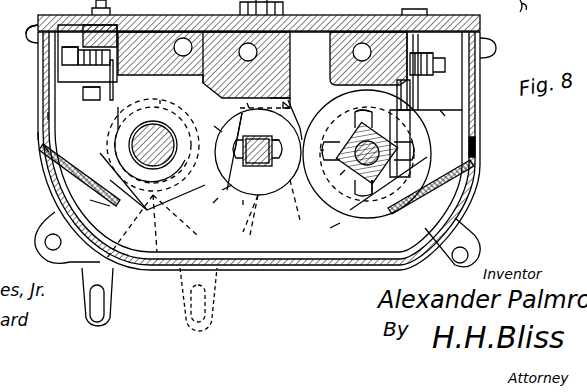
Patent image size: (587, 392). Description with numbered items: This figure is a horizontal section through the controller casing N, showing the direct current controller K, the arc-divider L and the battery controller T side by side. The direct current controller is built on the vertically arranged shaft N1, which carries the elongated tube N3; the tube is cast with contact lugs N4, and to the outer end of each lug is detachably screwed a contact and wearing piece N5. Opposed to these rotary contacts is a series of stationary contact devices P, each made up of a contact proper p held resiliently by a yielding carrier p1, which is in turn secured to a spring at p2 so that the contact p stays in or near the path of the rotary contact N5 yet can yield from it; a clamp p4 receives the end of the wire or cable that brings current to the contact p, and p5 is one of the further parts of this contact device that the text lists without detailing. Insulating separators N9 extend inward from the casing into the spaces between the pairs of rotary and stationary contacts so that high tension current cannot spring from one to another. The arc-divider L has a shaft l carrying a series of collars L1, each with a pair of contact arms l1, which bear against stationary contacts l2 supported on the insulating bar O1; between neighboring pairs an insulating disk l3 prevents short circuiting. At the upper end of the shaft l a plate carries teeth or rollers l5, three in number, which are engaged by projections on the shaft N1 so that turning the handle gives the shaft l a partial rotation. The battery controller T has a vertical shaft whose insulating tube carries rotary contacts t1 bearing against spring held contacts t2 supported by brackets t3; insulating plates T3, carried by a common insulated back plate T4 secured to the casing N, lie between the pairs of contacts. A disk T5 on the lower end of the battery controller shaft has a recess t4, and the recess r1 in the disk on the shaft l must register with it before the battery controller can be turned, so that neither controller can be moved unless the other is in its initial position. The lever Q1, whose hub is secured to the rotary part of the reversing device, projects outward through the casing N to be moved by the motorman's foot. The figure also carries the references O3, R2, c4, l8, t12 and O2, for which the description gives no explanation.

The casing N is at (305, 145).
The stationary contact device P is at (144, 144).
The direct current controller K is at (152, 197).
The arc-divider L is at (258, 171).
The battery controller T is at (367, 167).
The reversing lever Q1 is at (103, 273).
The wire clamp p4 is at (42, 36).
The spring p2 is at (82, 66).
The stationary contact device part p5 is at (84, 97).
The yielding carrier p1 is at (48, 116).
The contact piece p is at (26, 137).
The insulating separators N9 is at (46, 150).
The contact and wearing piece N5 is at (90, 199).
The contact lugs N4 is at (150, 100).
The opening O3 is at (160, 100).
The controller shaft N1 is at (163, 133).
The elongated tube N3 is at (160, 147).
The collars L1 is at (229, 125).
The insulating disk l3 is at (212, 121).
The rod R2 is at (167, 153).
The link c4 is at (222, 195).
The recess r1 is at (247, 103).
The contact arms l1 is at (274, 125).
The teeth or rollers l5 is at (293, 99).
The stationary contacts l2 is at (310, 125).
The arc-divider shaft l is at (244, 210).
The link l8 is at (210, 207).
The disk T5 is at (329, 233).
The brackets t3 is at (409, 65).
The rotary contacts t1 is at (364, 110).
The recess t4 is at (316, 140).
The spring held contacts t2 is at (335, 178).
The arm t12 is at (376, 194).
The insulated back plate T4 is at (440, 117).
The insulating plates T3 is at (478, 143).
The insulating bar O1 is at (251, 52).
The opening O2 is at (366, 52).